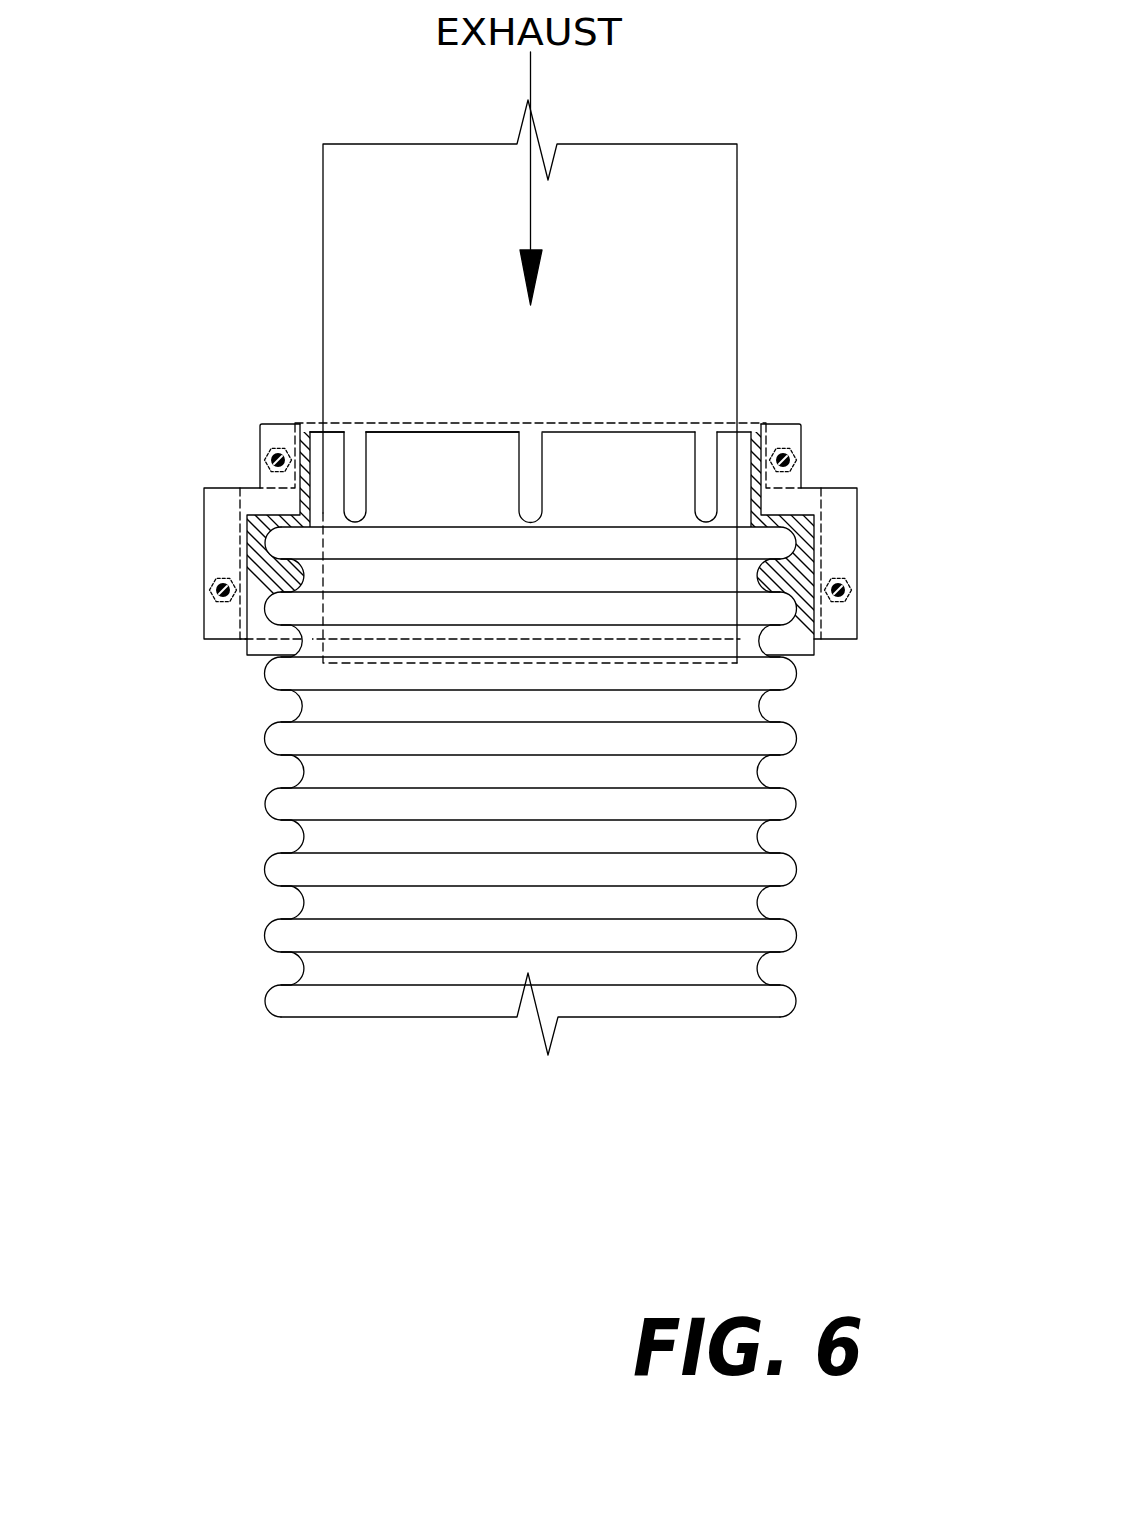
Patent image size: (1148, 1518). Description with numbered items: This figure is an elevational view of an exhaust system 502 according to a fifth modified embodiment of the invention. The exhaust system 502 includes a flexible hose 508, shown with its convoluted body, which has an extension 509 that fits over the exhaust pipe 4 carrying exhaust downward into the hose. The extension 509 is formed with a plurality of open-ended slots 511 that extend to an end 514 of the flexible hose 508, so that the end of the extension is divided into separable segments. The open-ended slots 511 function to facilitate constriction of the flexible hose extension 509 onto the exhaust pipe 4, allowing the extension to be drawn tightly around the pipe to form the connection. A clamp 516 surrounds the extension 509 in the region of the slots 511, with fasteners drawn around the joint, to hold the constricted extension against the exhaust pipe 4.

The exhaust pipe 4 is at (737, 144).
The exhaust system 502 is at (215, 302).
The flexible hose 508 is at (774, 1017).
The flexible hose extension 509 is at (480, 500).
The open-ended slots 511 is at (712, 432).
The end of the flexible hose 514 is at (448, 432).
The clamp flange 516 is at (812, 430).